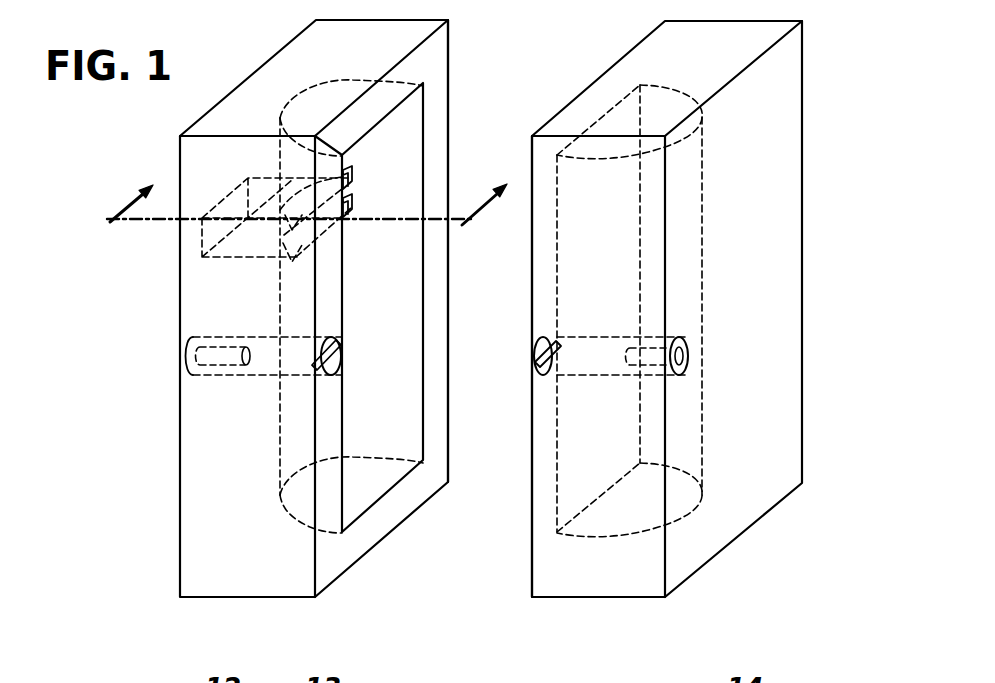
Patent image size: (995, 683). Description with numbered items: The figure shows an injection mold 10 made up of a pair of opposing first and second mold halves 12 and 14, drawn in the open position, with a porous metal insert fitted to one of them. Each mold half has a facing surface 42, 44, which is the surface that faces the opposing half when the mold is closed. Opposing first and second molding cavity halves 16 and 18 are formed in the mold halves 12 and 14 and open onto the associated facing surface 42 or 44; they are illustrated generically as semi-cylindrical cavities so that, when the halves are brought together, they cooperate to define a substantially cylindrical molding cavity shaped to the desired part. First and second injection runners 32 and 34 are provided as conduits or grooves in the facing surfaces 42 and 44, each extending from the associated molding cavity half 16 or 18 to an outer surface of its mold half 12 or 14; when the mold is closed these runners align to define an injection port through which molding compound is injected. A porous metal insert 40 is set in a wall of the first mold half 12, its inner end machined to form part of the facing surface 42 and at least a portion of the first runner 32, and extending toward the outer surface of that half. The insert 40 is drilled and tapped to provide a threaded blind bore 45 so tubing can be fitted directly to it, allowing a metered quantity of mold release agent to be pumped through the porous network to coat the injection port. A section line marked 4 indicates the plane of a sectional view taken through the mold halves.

The injection mold 10 is at (737, 616).
The first mold half 12 is at (293, 63).
The second mold half 14 is at (737, 48).
The first molding cavity half 16 is at (367, 495).
The second molding cavity half 18 is at (603, 513).
The first injection runner 32 is at (343, 358).
The second injection runner 34 is at (533, 367).
The porous metal insert 40 is at (217, 341).
The facing surface 42 is at (436, 70).
The facing surface 44 is at (545, 228).
The threaded blind bore 45 is at (197, 350).
The section line 4- 4 is at (302, 205).